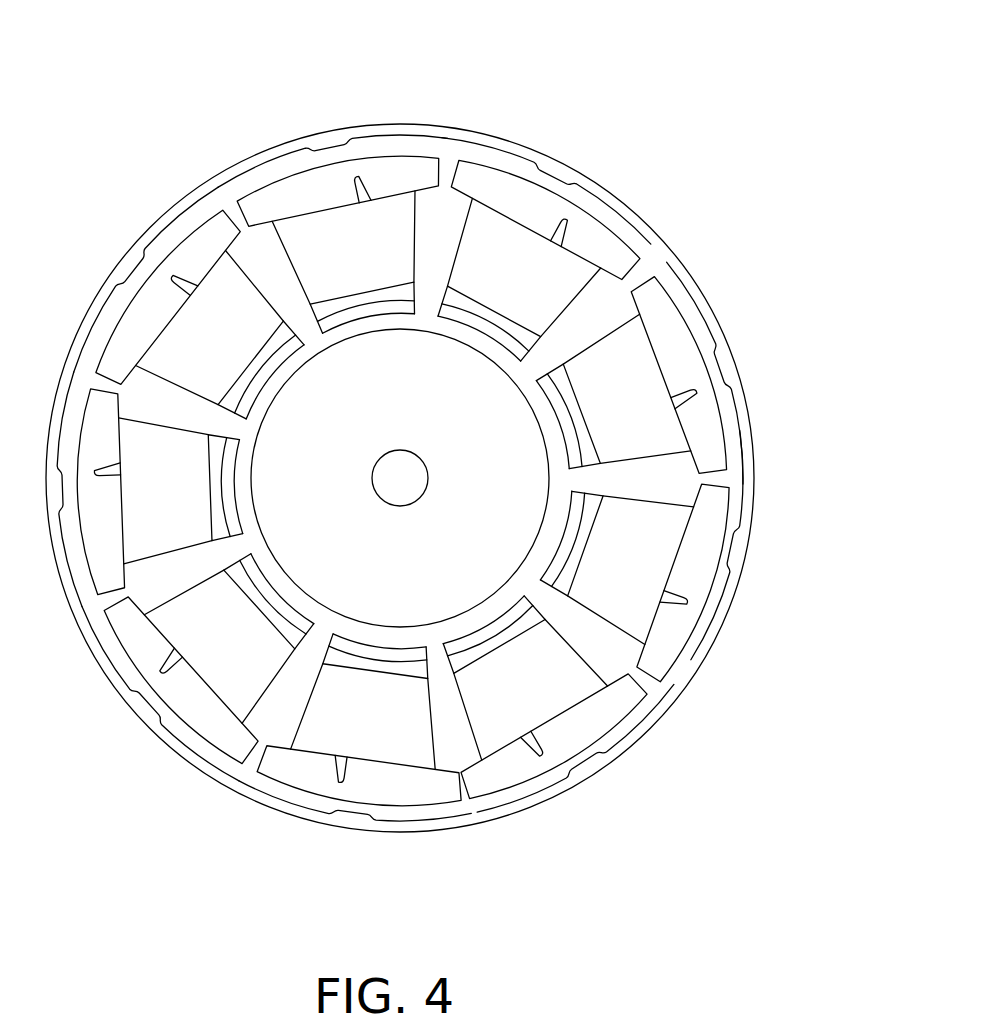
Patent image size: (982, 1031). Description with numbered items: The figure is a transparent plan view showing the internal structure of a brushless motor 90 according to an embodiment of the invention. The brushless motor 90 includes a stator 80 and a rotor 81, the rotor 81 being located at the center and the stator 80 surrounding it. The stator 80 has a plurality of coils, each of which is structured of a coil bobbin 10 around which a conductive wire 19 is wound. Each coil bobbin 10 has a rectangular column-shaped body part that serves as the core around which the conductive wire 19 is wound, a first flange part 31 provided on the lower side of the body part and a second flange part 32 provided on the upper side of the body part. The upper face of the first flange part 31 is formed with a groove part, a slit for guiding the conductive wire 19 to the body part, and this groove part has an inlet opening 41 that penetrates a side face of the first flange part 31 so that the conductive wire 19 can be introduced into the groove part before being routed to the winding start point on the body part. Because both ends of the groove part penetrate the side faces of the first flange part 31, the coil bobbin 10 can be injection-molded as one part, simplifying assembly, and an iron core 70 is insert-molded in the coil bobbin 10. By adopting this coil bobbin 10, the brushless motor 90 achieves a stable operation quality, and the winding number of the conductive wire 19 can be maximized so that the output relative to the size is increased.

The brushless motor 90 is at (58, 63).
The stator 80 is at (680, 268).
The rotor 81 is at (418, 408).
The coil bobbin 10 is at (388, 528).
The iron core 70 is at (378, 648).
The second flange part 32 is at (402, 668).
The first flange part 31 is at (417, 785).
The inlet opening 41 is at (323, 773).
The conductive wire 19 is at (212, 643).